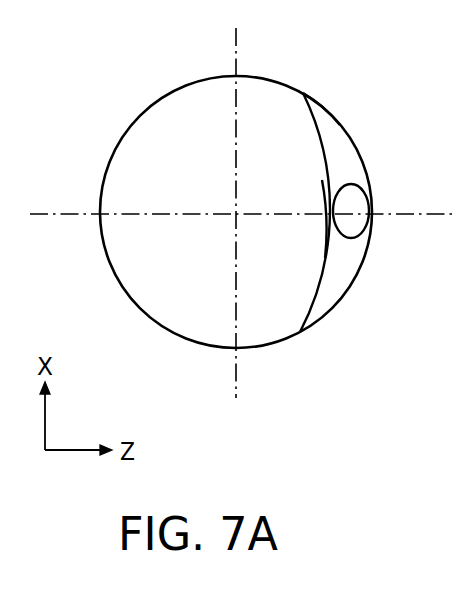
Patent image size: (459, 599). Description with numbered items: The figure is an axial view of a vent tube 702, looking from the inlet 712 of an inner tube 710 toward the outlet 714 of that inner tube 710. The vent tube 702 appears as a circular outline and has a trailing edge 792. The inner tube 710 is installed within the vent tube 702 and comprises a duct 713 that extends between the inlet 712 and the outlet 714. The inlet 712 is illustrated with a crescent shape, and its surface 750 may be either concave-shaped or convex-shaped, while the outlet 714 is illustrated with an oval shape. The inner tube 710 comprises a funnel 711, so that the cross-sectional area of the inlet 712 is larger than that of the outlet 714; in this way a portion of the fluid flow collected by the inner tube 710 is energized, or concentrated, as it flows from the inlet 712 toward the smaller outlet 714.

The vent tube 702 is at (148, 106).
The inner tube 710 is at (343, 147).
The funnel 711 is at (347, 160).
The inlet 712 is at (316, 133).
The duct 713 is at (334, 277).
The outlet 714 is at (353, 240).
The surface 750 is at (326, 253).
The trailing edge 792 is at (374, 216).